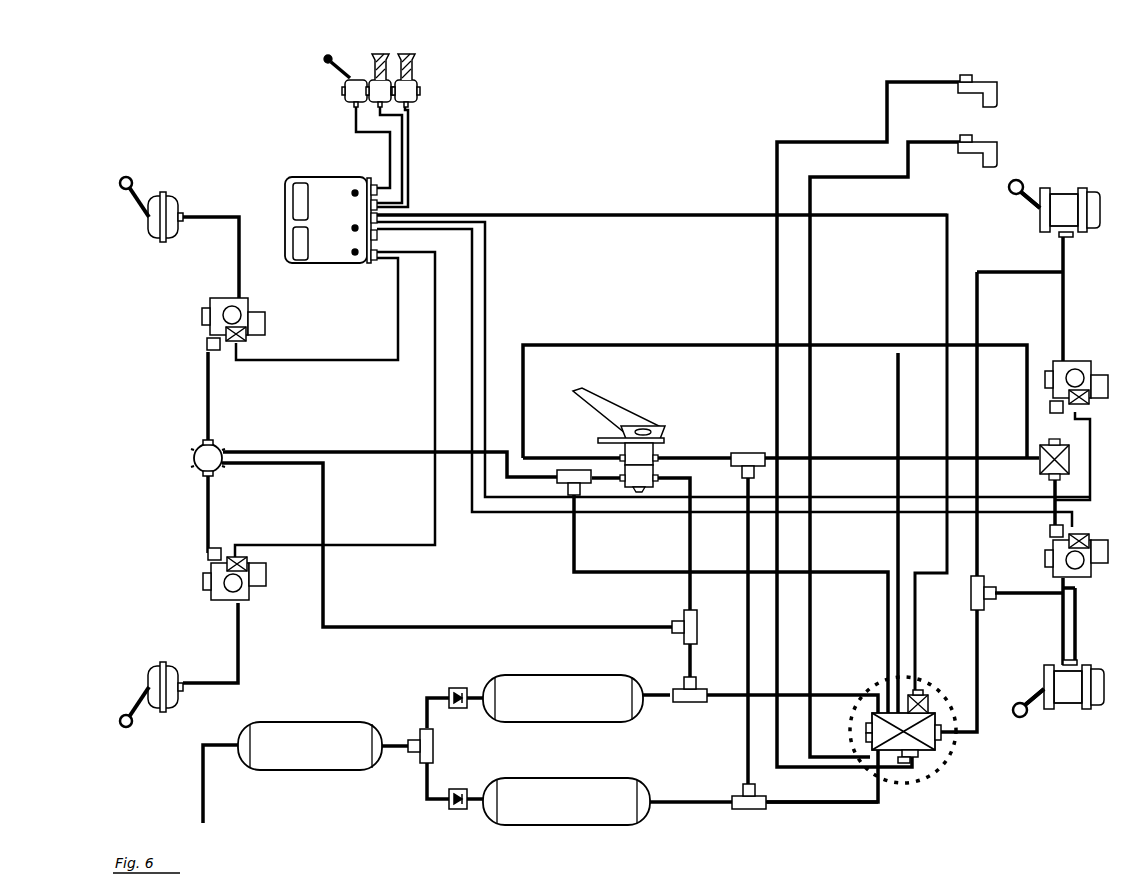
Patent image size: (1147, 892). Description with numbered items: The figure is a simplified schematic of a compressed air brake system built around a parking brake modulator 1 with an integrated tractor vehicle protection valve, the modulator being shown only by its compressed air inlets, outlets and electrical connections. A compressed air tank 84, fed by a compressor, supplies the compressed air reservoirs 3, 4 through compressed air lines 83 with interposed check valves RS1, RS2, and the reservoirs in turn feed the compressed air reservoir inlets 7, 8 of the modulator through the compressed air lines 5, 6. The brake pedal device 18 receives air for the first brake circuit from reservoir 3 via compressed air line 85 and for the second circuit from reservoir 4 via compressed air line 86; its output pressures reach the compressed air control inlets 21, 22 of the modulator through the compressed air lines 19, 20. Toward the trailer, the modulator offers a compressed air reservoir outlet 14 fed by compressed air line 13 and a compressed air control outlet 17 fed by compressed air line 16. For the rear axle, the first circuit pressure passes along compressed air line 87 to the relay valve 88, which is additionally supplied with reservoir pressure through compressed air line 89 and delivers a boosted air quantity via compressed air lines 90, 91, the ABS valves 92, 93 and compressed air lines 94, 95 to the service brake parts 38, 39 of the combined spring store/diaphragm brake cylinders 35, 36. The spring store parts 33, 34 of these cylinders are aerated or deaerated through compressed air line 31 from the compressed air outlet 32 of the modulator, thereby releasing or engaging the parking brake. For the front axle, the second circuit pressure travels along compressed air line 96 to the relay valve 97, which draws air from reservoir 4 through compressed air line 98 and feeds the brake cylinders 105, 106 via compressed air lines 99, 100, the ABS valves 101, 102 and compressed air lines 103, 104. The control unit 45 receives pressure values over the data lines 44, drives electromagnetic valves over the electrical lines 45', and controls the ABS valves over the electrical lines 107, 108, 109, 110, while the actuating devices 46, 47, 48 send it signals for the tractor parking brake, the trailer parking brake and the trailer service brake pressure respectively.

The parking brake modulator 1 is at (938, 707).
The compressed air reservoir 3 is at (625, 826).
The compressed air reservoir 4 is at (580, 723).
The compressed air line 5 is at (833, 802).
The compressed air line 6 is at (822, 693).
The compressed air reservoir inlet 7 is at (870, 740).
The compressed air reservoir inlet 8 is at (870, 725).
The compressed air line 13 is at (850, 177).
The compressed air reservoir outlet 14 is at (900, 760).
The compressed air line 16 is at (800, 142).
The compressed air control outlet 17 is at (918, 758).
The brake pedal device 18 is at (637, 420).
The compressed air line 19 is at (896, 400).
The compressed air line 20 is at (575, 521).
The compressed air control inlet 21 is at (914, 695).
The compressed air control inlet 22 is at (878, 710).
The compressed air line 31 is at (980, 645).
The compressed air outlet 32 is at (941, 740).
The spring store part 33 is at (1100, 206).
The spring store part 34 is at (1108, 685).
The combined spring store/diaphragm brake cylinder 35 is at (1068, 195).
The combined spring store/diaphragm brake cylinder 36 is at (1078, 710).
The service brake part 38 is at (1043, 188).
The service brake part 39 is at (1043, 718).
The data line 44 is at (608, 213).
The control unit 45 is at (331, 204).
The electrical line 45' is at (662, 198).
The actuating device 46 is at (378, 54).
The actuating device 47 is at (404, 54).
The actuating device 48 is at (346, 59).
The compressed air line 83 is at (413, 740).
The compressed air tank 84 is at (298, 770).
The compressed air line 85 is at (748, 669).
The compressed air line 86 is at (692, 592).
The compressed air line 87 is at (1000, 345).
The relay valve 88 is at (1072, 458).
The compressed air line 89 is at (838, 458).
The compressed air line 90 is at (1092, 420).
The compressed air line 91 is at (1058, 480).
The ABS valve 92 is at (1105, 368).
The ABS valve 93 is at (1105, 570).
The compressed air line 94 is at (1065, 316).
The compressed air line 95 is at (1075, 625).
The compressed air line 96 is at (262, 452).
The relay valve 97 is at (196, 452).
The compressed air line 98 is at (480, 627).
The compressed air line 99 is at (210, 385).
The compressed air line 100 is at (210, 500).
The ABS valve 101 is at (250, 300).
The ABS valve 102 is at (255, 595).
The compressed air line 103 is at (216, 216).
The compressed air line 104 is at (207, 683).
The brake cylinder 105 is at (172, 196).
The brake cylinder 106 is at (176, 663).
The electrical line 107 is at (842, 497).
The electrical line 108 is at (845, 514).
The electrical line 109 is at (308, 360).
The electrical line 110 is at (370, 545).
The check valve RS1 is at (458, 788).
The check valve RS2 is at (458, 688).